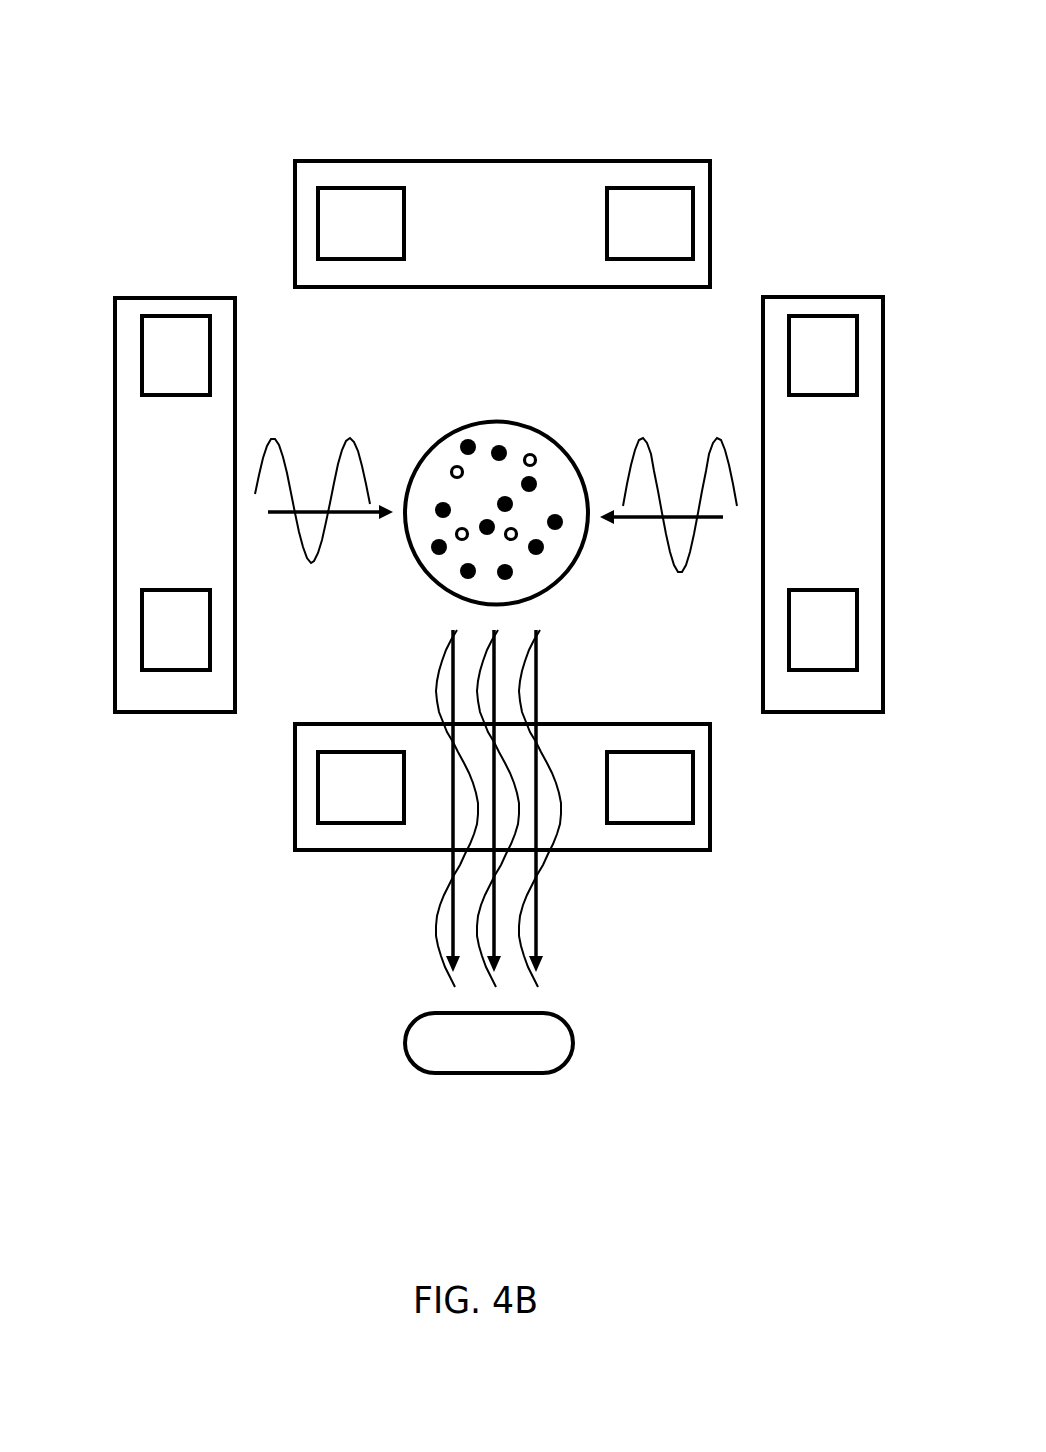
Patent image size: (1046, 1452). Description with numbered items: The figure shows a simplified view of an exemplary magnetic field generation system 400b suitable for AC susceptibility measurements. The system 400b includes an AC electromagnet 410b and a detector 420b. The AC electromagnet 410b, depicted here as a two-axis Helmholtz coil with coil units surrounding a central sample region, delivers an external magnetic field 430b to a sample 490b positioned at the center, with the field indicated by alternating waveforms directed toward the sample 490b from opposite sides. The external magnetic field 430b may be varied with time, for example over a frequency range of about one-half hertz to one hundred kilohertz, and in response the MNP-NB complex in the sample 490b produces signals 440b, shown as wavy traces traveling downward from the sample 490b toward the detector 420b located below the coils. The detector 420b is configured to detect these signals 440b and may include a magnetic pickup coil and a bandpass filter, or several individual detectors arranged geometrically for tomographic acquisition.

The magnetic field generation system 400b is at (438, 104).
The AC electromagnet 410b is at (170, 297).
The detector 420b is at (405, 1043).
The external magnetic field 430b is at (335, 465).
The signals 440b is at (433, 927).
The sample 490b is at (433, 443).